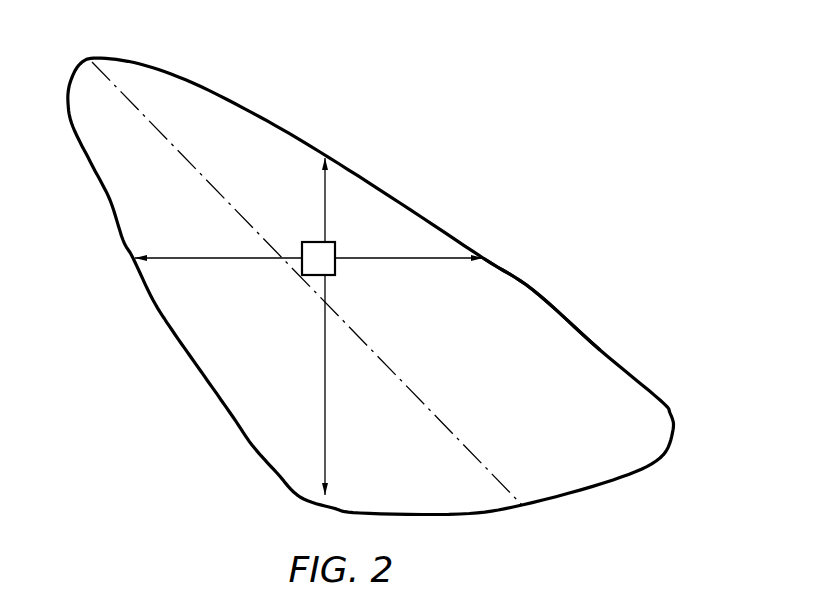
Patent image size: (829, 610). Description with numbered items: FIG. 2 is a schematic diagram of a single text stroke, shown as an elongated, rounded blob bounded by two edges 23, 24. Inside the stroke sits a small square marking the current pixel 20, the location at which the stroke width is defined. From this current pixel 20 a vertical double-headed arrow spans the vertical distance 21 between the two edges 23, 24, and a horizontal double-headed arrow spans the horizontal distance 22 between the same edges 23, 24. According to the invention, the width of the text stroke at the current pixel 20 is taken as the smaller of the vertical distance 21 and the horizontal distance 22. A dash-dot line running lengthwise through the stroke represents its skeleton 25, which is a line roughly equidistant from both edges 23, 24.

The current pixel 20 is at (298, 234).
The vertical distance 21 is at (257, 326).
The horizontal distance 22 is at (309, 239).
The edge 23 is at (371, 286).
The edge 24 is at (541, 303).
The skeleton 25 is at (309, 283).